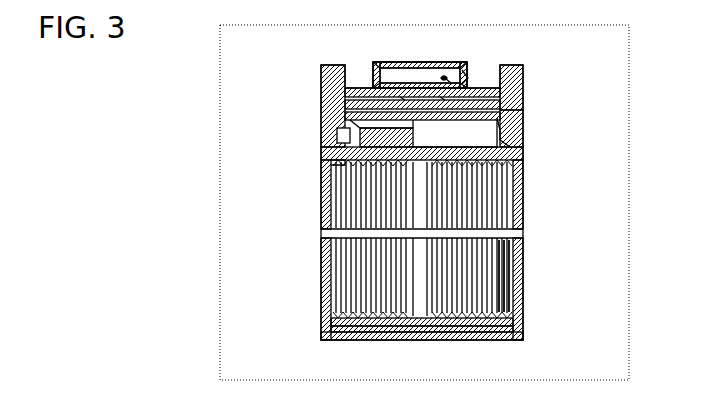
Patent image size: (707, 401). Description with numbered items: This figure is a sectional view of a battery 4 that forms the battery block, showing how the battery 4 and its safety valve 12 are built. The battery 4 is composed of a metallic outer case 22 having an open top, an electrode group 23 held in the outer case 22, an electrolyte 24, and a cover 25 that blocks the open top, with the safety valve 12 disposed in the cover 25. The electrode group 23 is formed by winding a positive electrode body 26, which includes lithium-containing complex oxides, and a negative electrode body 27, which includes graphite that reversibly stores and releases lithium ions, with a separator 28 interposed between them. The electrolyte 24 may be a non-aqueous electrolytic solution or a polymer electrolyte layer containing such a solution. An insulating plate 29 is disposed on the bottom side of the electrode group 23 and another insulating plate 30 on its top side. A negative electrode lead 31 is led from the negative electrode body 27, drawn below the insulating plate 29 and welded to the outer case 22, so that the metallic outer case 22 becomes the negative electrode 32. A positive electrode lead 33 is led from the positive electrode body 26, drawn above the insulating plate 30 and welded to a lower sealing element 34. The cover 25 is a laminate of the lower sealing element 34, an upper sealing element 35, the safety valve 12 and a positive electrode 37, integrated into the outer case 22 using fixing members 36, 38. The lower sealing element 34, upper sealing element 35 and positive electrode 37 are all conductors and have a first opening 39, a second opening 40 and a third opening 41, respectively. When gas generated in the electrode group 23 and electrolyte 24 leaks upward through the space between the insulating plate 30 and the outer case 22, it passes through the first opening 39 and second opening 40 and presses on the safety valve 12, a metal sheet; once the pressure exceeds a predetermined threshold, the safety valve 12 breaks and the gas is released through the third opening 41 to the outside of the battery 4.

The battery 4 is at (557, 60).
The safety valve 12 is at (523, 93).
The outer case 22 is at (321, 212).
The electrode group 23 is at (573, 228).
The electrolyte 24 is at (523, 198).
The cover 25 is at (258, 45).
The positive electrode body 26 is at (513, 248).
The negative electrode body 27 is at (513, 285).
The separator 28 is at (513, 258).
The insulating plate 29 is at (325, 330).
The insulating plate 30 is at (335, 160).
The negative electrode lead 31 is at (523, 325).
The negative electrode 32 is at (417, 342).
The positive electrode lead 33 is at (330, 146).
The lower sealing element 34 is at (321, 122).
The upper sealing element 35 is at (345, 102).
The fixing member 36 is at (523, 118).
The positive electrode 37 is at (370, 62).
The fixing member 38 is at (345, 88).
The first opening 39 is at (430, 122).
The second opening 40 is at (437, 77).
The third opening 41 is at (470, 76).